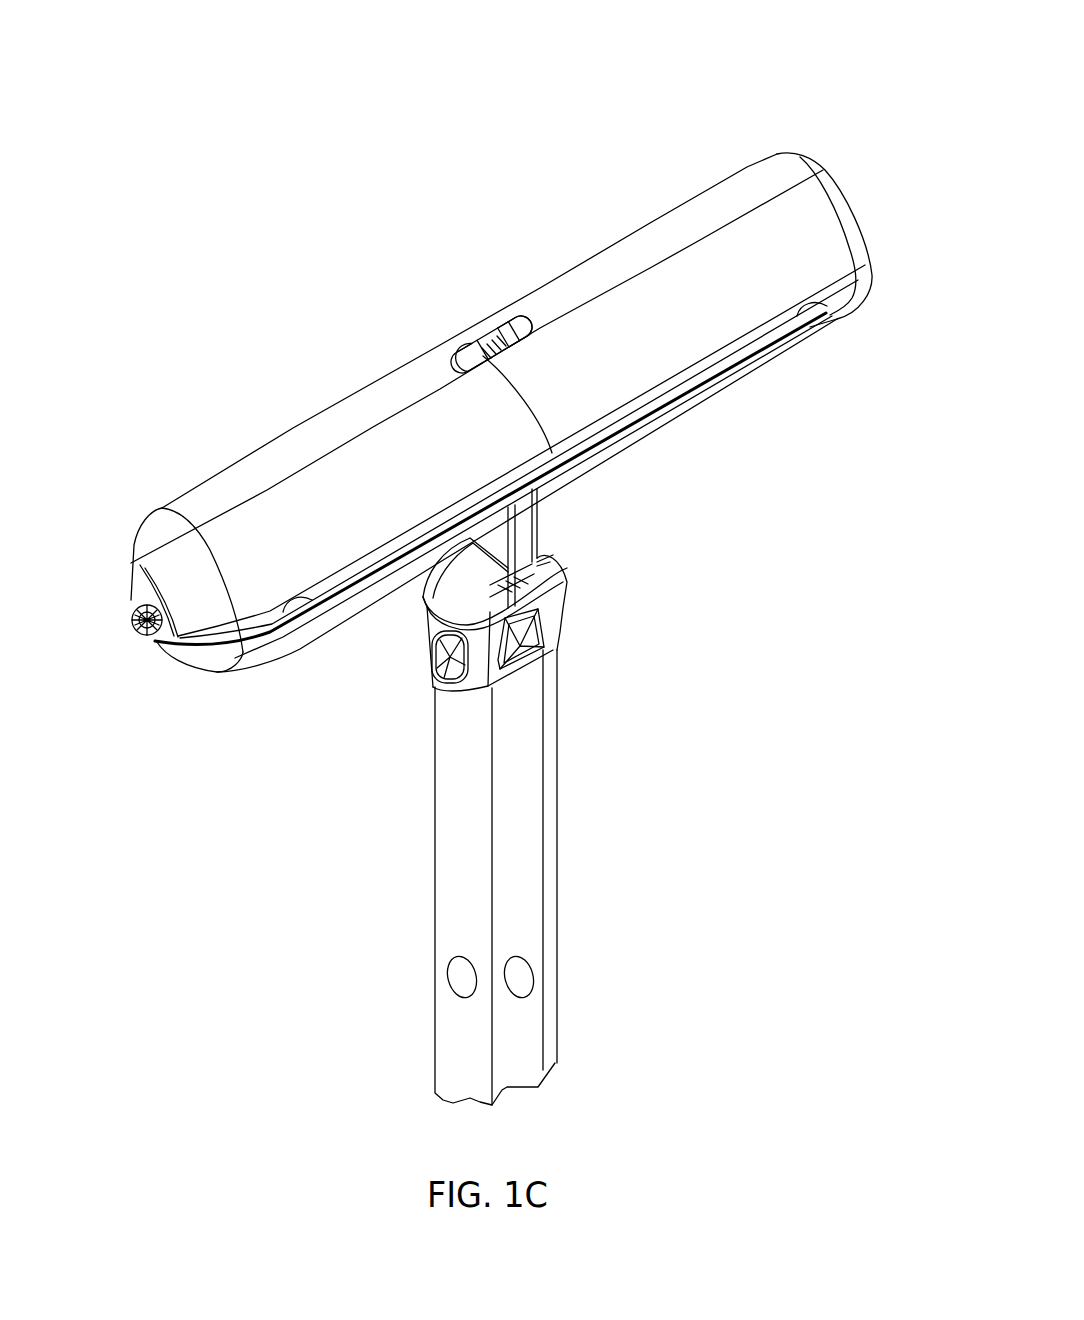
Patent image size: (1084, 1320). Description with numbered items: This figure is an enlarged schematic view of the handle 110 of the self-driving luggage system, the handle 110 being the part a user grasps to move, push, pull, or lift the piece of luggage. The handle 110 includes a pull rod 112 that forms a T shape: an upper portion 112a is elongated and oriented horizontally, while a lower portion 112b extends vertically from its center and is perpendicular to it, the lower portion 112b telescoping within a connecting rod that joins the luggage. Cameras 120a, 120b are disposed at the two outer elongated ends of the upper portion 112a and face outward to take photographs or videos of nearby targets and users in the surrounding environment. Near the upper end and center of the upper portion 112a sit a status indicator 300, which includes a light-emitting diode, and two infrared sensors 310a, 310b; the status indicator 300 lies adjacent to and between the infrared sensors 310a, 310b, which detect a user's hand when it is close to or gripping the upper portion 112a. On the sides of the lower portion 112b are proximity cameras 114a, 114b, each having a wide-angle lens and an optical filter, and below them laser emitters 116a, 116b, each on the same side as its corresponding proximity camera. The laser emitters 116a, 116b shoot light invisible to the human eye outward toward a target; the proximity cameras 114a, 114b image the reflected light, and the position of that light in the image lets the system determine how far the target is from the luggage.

The handle 110 is at (794, 76).
The pull rod 112 is at (660, 338).
The upper portion 112a is at (383, 463).
The lower portion 112b is at (533, 778).
The proximity camera 114a is at (543, 650).
The proximity camera 114b is at (433, 650).
The laser emitter 116a is at (518, 977).
The laser emitter 116b is at (463, 973).
The camera 120a is at (133, 628).
The camera 120b is at (855, 217).
The status indicator 300 is at (463, 358).
The infrared sensor 310a is at (458, 355).
The infrared sensor 310b is at (512, 328).